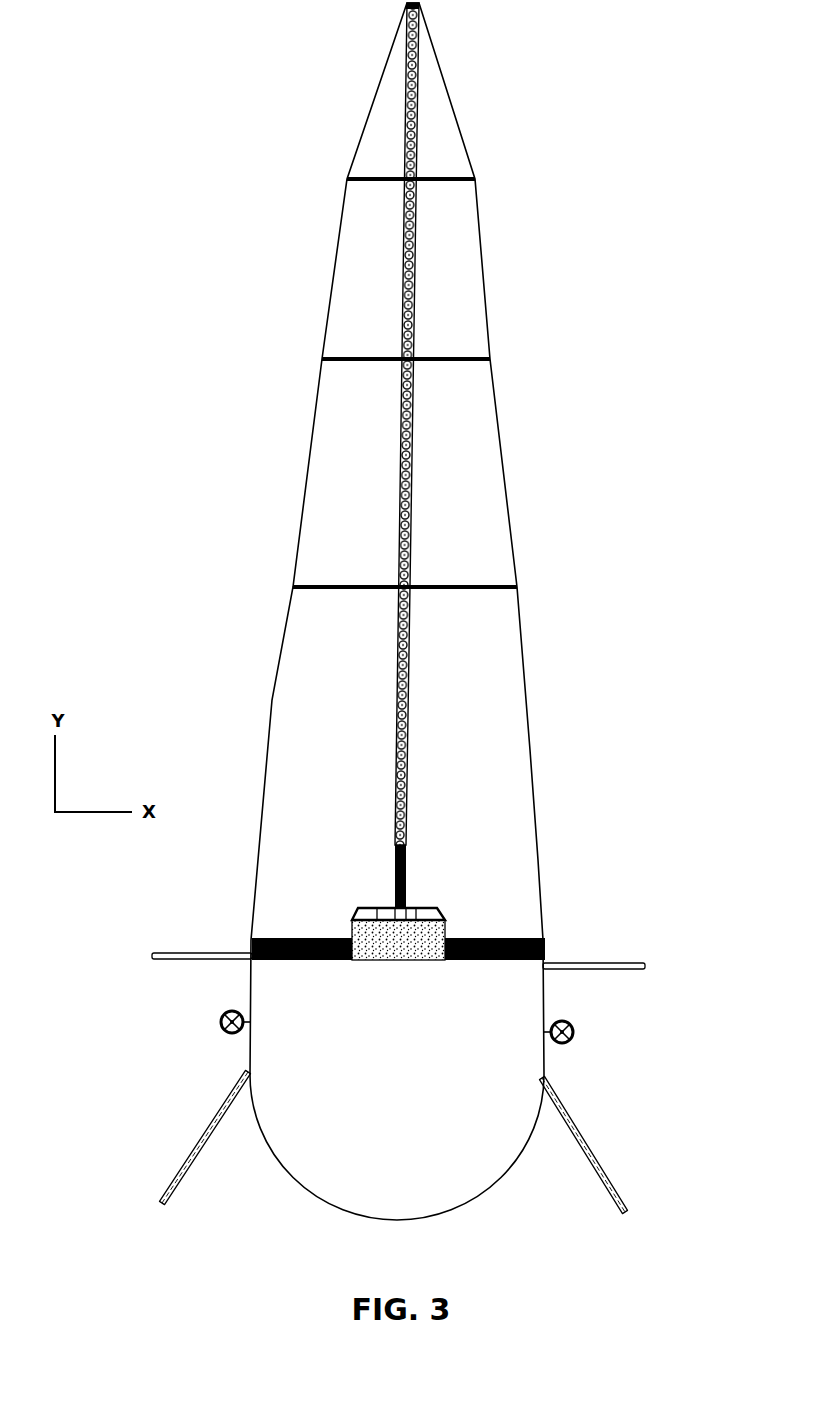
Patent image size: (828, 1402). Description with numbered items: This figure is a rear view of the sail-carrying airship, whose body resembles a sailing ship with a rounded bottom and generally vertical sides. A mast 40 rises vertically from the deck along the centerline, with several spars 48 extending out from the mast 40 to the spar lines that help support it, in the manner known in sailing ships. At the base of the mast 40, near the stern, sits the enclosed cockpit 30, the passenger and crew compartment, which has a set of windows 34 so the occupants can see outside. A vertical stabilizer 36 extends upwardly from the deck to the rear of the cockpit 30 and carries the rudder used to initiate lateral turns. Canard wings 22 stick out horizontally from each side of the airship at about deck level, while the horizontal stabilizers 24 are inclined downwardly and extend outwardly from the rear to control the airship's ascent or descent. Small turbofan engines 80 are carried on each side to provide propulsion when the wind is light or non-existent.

The canard wing 22 is at (220, 957).
The horizontal stabilizer 24 is at (195, 1147).
The cockpit 30 is at (447, 928).
The windows 34 is at (430, 908).
The vertical stabilizer 36 is at (408, 850).
The mast 40 is at (412, 297).
The spars 48 is at (460, 178).
The turbofan engines 80 is at (220, 1019).